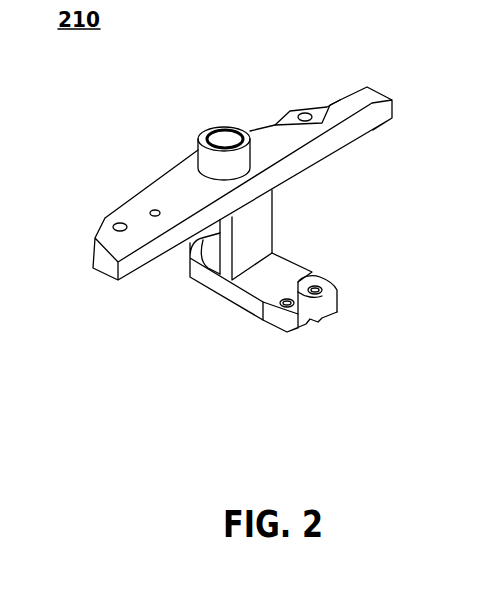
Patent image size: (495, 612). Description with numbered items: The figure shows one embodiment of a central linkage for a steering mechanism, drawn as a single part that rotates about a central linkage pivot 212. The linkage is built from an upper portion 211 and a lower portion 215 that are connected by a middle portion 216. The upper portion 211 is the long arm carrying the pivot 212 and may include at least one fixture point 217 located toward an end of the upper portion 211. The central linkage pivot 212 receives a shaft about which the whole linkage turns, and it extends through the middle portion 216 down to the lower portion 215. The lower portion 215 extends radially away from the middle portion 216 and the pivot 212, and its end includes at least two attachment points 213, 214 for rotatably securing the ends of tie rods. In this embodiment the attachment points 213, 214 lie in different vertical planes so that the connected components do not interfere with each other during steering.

The upper portion 211 is at (374, 104).
The central linkage pivot 212 is at (218, 127).
The attachment point 213 is at (285, 305).
The attachment point 214 is at (326, 293).
The lower portion 215 is at (223, 295).
The middle portion 216 is at (259, 228).
The fixture point 217 is at (307, 111).